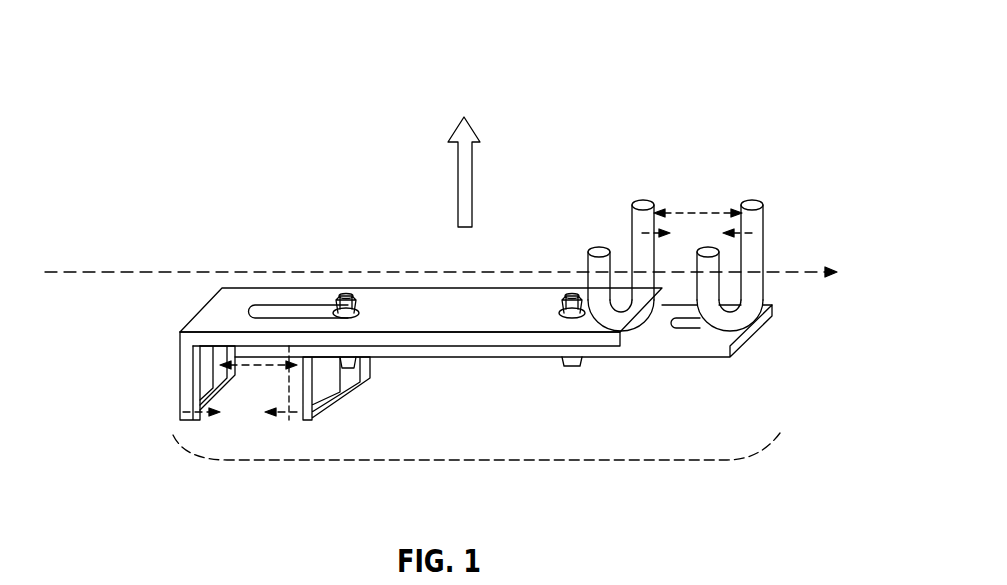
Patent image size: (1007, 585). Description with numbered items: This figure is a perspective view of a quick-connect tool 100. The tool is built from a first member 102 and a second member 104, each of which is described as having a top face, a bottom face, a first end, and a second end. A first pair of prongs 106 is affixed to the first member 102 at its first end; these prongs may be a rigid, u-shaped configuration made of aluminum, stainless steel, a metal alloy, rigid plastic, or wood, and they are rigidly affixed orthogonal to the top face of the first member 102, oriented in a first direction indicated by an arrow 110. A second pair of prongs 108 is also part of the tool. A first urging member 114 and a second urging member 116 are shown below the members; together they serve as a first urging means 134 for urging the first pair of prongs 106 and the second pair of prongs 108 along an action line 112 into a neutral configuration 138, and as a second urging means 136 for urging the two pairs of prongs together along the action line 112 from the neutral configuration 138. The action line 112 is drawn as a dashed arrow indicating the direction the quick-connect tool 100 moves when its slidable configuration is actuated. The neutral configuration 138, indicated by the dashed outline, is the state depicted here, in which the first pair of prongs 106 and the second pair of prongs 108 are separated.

The quick-connect tool 100 is at (782, 87).
The first member 102 is at (432, 340).
The second member 104 is at (672, 352).
The first pair of prongs 106 is at (602, 310).
The second pair of prongs 108 is at (735, 317).
The arrow 110 is at (471, 126).
The action line 112 is at (120, 272).
The first urging member 114 is at (178, 392).
The second urging member 116 is at (322, 388).
The first urging means 134 is at (481, 293).
The second urging means 136 is at (467, 323).
The neutral configuration 138 is at (476, 463).